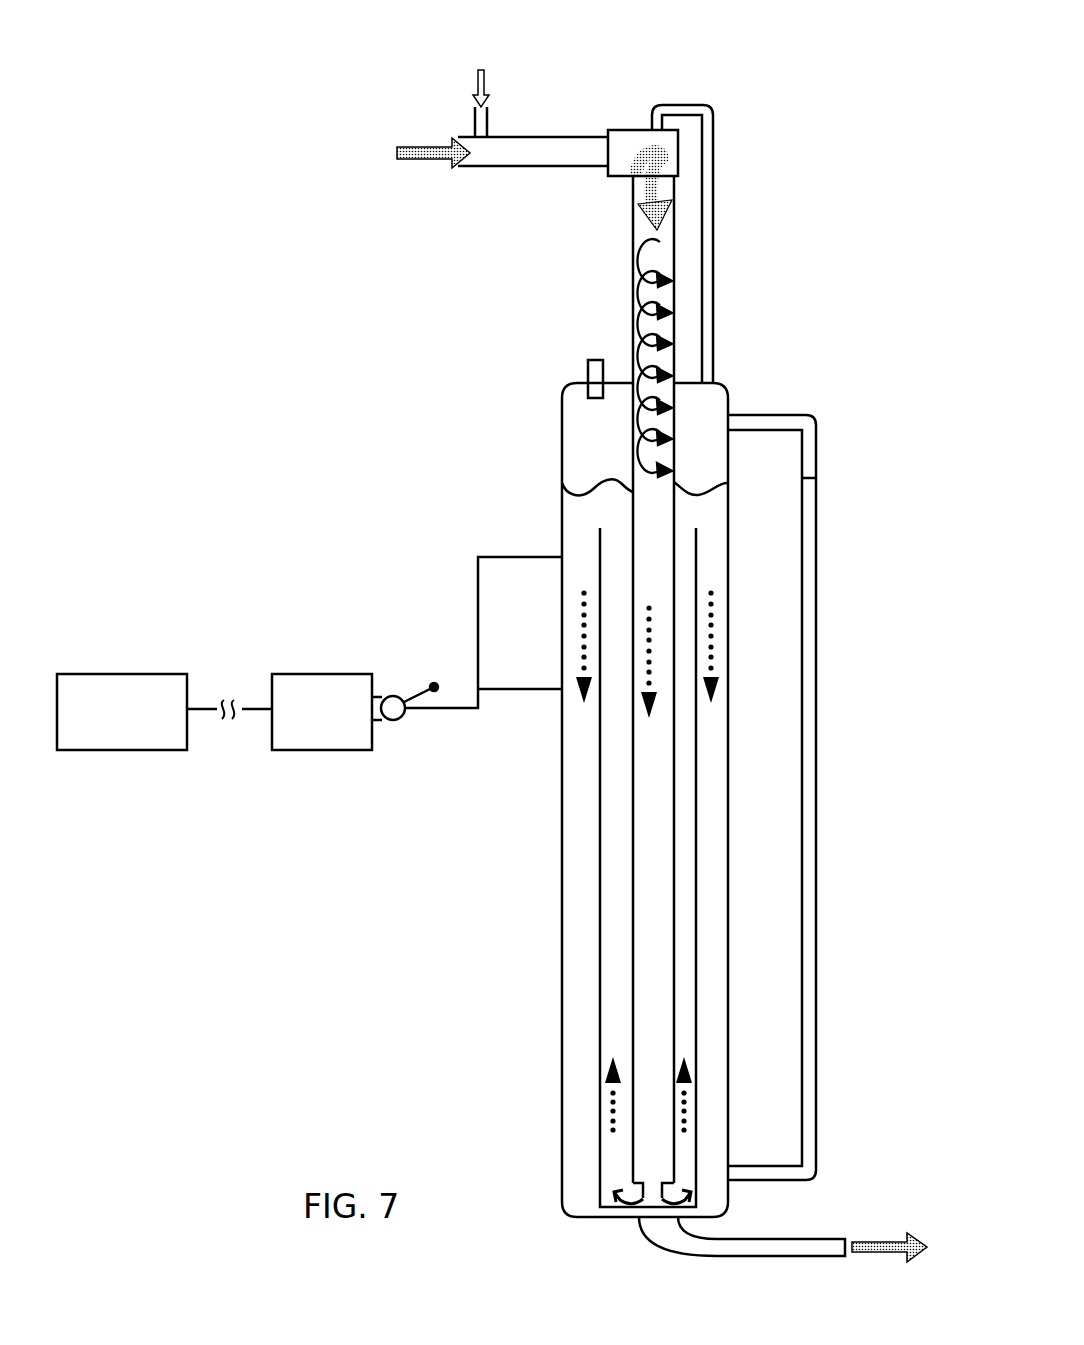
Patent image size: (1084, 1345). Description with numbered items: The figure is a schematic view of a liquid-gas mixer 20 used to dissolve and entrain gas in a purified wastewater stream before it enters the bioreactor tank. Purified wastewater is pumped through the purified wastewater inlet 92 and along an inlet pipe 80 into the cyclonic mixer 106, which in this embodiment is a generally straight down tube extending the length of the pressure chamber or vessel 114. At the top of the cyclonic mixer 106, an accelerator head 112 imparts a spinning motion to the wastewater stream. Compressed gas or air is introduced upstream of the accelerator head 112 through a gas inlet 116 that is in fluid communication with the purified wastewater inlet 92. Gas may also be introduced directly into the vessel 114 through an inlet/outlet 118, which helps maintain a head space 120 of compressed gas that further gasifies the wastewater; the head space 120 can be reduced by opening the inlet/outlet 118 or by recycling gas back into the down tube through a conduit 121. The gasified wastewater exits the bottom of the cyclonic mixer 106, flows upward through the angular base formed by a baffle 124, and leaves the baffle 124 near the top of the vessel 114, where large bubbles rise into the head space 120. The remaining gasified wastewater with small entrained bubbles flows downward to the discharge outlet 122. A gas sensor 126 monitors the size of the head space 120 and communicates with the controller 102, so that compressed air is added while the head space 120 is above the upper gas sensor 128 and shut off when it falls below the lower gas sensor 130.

The liquid-gas mixer 20 is at (427, 344).
The inlet conduit 80 is at (527, 157).
The purified wastewater inlet 92 is at (425, 157).
The controller 102 is at (152, 750).
The cyclonic mixer 106 is at (636, 283).
The accelerator head 112 is at (648, 142).
The vessel 114 is at (561, 960).
The gas inlet 116 is at (478, 120).
The inlet/outlet 118 is at (588, 363).
The head space 120 is at (573, 452).
The conduit 121 is at (710, 172).
The discharge outlet 122 is at (712, 1248).
The baffle 124 is at (598, 862).
The gas sensor 126 is at (338, 750).
The upper gas sensor 128 is at (483, 553).
The lower gas sensor 130 is at (515, 690).